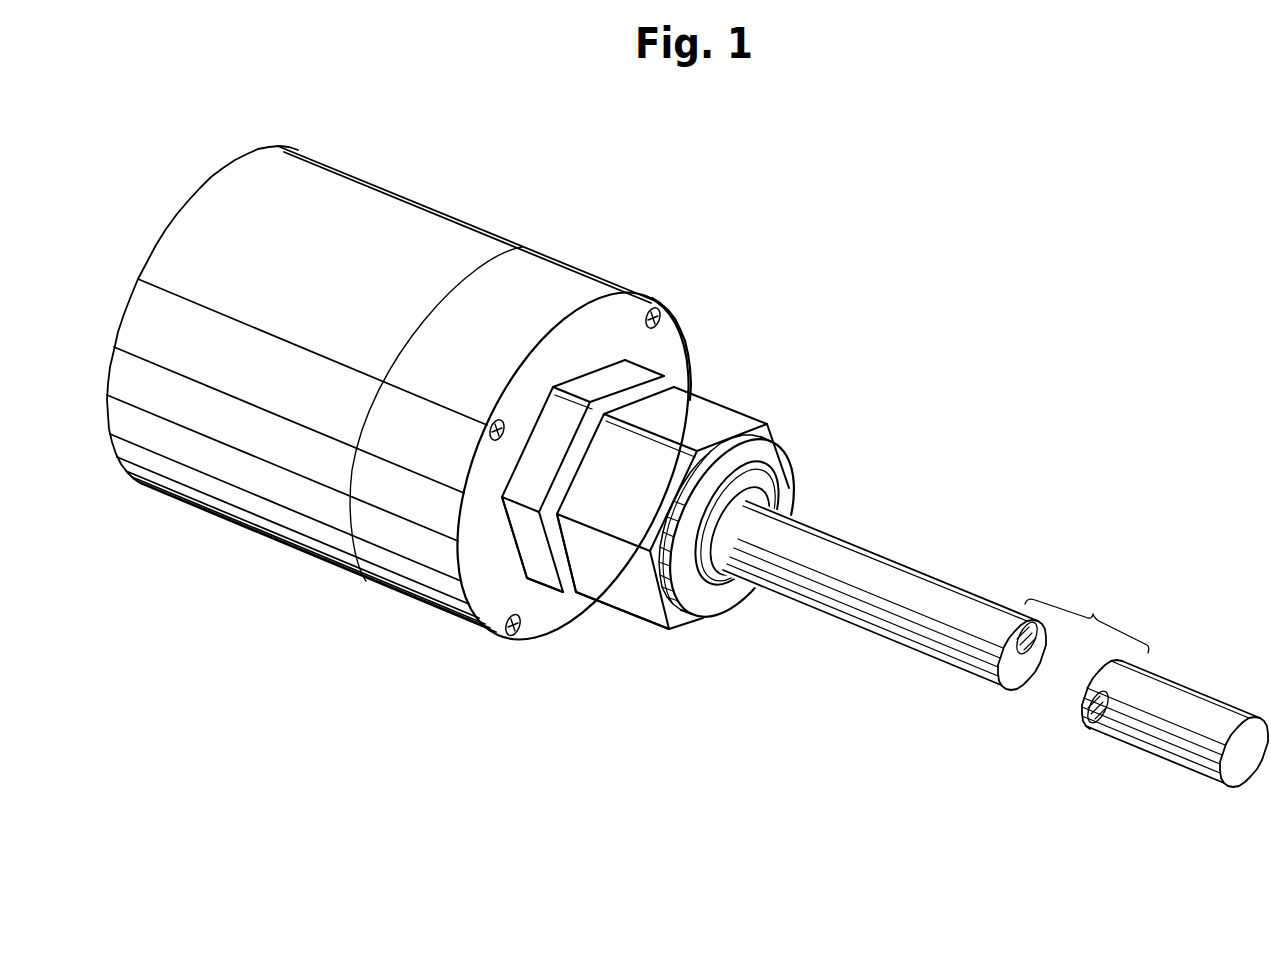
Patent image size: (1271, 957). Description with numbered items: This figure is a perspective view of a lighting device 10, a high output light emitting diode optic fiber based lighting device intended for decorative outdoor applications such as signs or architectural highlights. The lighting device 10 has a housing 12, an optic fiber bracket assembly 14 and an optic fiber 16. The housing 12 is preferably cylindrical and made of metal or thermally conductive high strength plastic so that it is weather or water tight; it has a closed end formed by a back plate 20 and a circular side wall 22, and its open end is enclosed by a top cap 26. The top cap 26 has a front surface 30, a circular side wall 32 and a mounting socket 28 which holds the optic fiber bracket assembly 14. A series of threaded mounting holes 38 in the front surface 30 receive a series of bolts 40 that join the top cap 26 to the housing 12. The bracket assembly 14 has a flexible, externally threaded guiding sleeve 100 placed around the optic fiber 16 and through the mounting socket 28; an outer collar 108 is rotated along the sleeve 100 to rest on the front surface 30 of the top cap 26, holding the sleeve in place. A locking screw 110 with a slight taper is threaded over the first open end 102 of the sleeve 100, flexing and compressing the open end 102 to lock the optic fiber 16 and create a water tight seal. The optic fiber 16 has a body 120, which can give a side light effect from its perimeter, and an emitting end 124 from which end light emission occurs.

The lighting device 10 is at (523, 175).
The housing 12 is at (397, 192).
The optic fiber bracket assembly 14 is at (734, 417).
The optic fiber 16 is at (880, 573).
The back plate 20 is at (222, 167).
The circular side wall 22 is at (307, 183).
The top cap 26 is at (588, 283).
The mounting socket 28 is at (622, 365).
The front surface 30 is at (675, 330).
The circular side wall 32 is at (382, 586).
The threaded mounting holes 38 is at (497, 425).
The bolts 40 is at (490, 437).
The guiding sleeve 100 is at (547, 582).
The first open end 102 is at (762, 503).
The outer collar 108 is at (525, 567).
The locking screw 110 is at (762, 434).
The body 120 is at (923, 652).
The emitting end 124 is at (1144, 732).